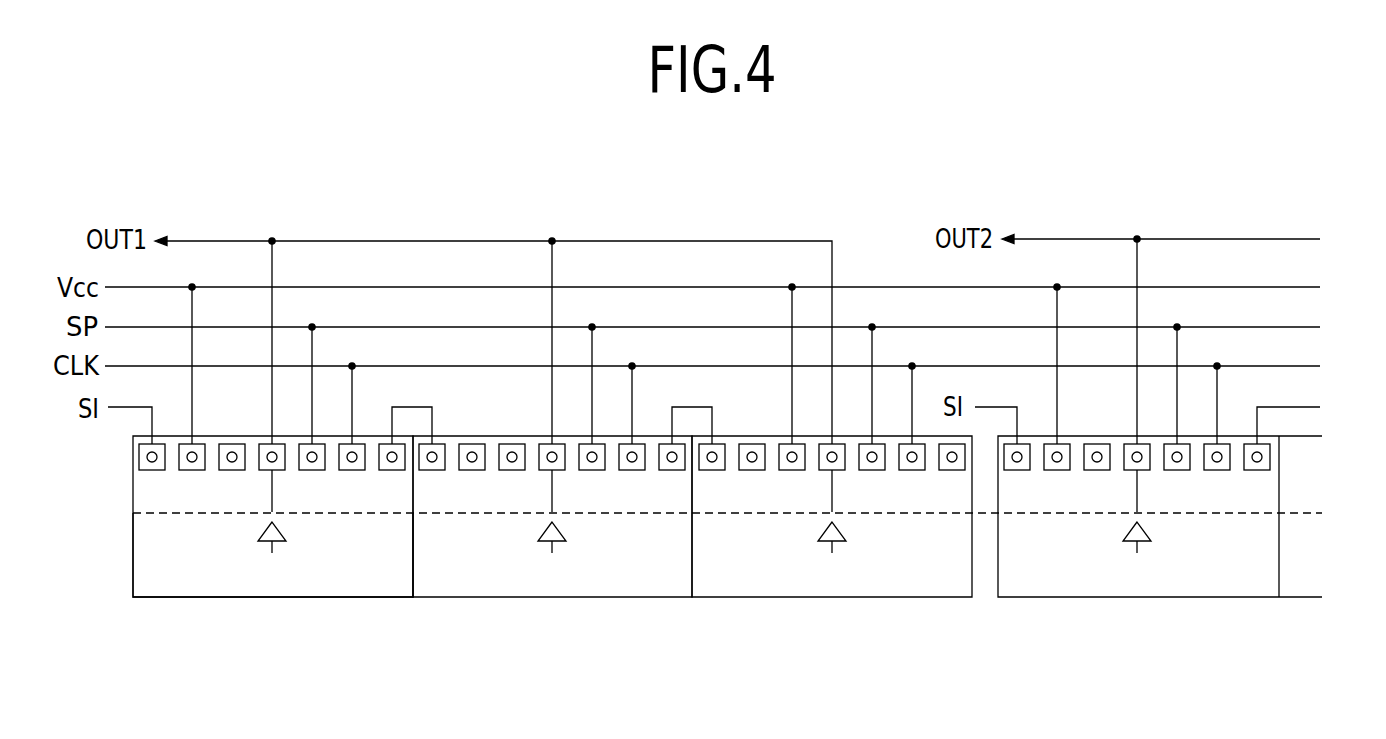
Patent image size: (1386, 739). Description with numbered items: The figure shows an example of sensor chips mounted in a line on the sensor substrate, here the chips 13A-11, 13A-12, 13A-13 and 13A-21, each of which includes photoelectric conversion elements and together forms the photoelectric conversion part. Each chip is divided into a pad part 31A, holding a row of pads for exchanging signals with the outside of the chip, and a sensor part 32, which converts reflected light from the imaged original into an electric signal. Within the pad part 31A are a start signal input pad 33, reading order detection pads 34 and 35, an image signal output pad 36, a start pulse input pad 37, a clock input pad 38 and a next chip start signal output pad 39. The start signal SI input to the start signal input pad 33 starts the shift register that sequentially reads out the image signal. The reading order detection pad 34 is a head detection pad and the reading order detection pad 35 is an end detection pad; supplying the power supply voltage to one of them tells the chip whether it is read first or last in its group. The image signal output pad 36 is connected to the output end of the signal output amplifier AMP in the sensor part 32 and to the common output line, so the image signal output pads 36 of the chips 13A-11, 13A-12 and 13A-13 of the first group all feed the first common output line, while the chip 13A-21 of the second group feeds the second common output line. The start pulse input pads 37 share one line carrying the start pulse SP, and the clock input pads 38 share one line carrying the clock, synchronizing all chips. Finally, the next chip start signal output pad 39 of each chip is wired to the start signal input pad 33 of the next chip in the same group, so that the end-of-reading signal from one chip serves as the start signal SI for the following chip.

The pad part 31A is at (138, 501).
The sensor part 32 is at (148, 557).
The start signal input pad 33 is at (152, 471).
The reading order detection pad 34 is at (192, 471).
The reading order detection pad 35 is at (232, 471).
The image signal output pad 36 is at (274, 471).
The start pulse input pad 37 is at (312, 471).
The clock input pad 38 is at (352, 471).
The next chip start signal output pad 39 is at (392, 471).
The sensor chip 13A-11 is at (272, 598).
The sensor chip 13A-12 is at (550, 598).
The sensor chip 13A-13 is at (831, 598).
The sensor chip 13A-21 is at (1158, 598).
The signal output amplifier AMP is at (287, 531).